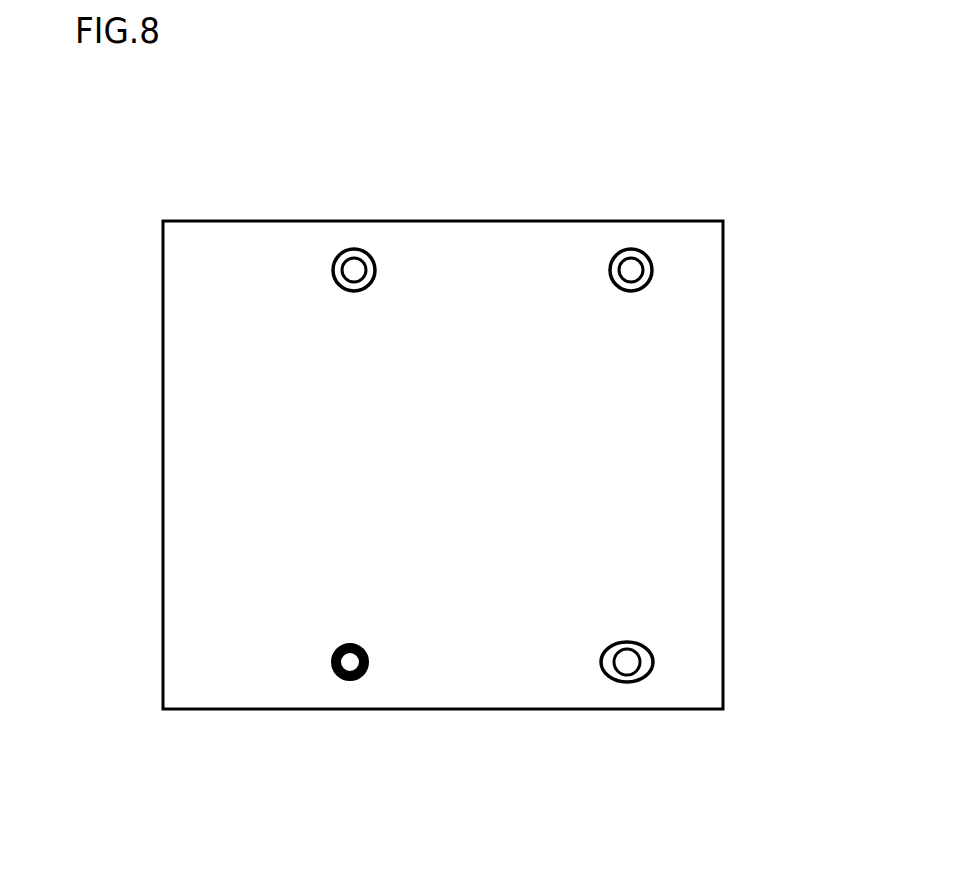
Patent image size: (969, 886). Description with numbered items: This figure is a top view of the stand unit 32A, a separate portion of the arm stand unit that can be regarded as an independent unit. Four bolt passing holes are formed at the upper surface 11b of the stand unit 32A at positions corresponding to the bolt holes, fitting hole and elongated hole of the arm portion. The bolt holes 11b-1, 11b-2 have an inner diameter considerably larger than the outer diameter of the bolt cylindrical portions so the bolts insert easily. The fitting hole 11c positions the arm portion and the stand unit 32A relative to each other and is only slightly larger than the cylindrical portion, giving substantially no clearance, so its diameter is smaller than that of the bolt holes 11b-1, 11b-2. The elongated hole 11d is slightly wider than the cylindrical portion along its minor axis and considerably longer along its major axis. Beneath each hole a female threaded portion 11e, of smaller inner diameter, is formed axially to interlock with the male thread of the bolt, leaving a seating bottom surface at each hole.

The stand unit 32A is at (230, 212).
The upper surface 11b is at (190, 427).
The bolt hole 11b-1 is at (630, 249).
The bolt hole 11b-2 is at (342, 249).
The fitting hole 11c is at (334, 655).
The elongated hole 11d is at (650, 648).
The female threaded portion 11e is at (373, 262).